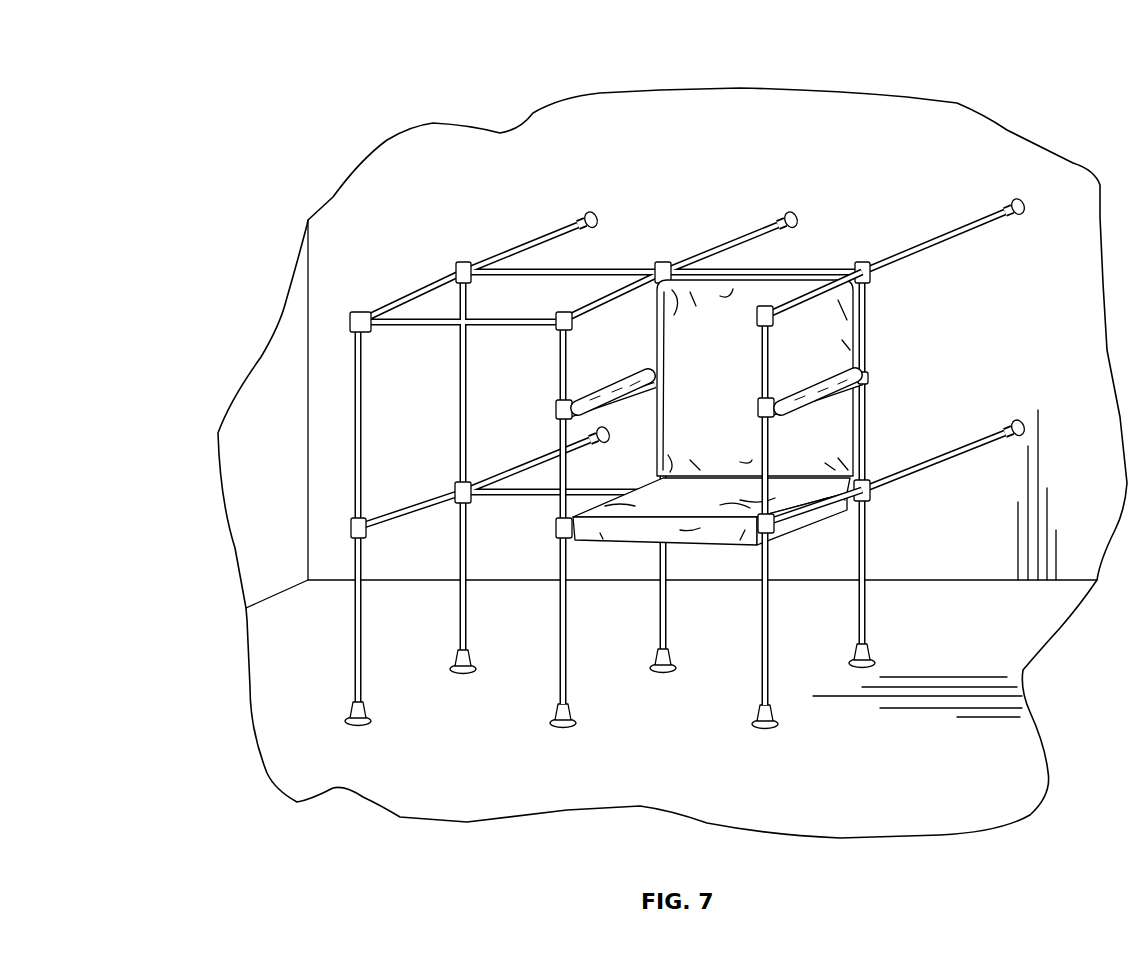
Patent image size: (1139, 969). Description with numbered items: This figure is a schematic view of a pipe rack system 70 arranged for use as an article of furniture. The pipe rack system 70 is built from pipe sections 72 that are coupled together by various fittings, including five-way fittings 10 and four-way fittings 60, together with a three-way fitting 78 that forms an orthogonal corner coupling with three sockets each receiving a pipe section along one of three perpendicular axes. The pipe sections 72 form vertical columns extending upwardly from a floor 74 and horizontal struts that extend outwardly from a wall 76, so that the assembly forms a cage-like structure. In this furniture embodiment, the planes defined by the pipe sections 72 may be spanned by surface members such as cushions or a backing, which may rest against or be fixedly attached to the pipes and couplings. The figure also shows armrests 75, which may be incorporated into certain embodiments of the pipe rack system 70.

The five-way fitting 10 is at (672, 263).
The four-way fitting 60 is at (462, 263).
The pipe rack system 70 is at (243, 125).
The pipe sections 72 is at (870, 348).
The floor 74 is at (365, 783).
The armrests 75 is at (618, 383).
The wall 76 is at (767, 107).
The three-way fitting 78 is at (352, 324).